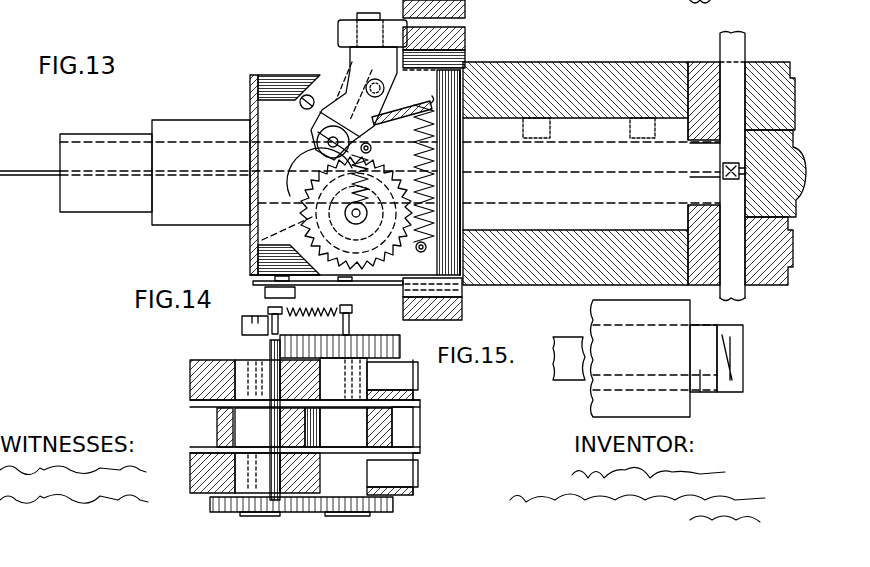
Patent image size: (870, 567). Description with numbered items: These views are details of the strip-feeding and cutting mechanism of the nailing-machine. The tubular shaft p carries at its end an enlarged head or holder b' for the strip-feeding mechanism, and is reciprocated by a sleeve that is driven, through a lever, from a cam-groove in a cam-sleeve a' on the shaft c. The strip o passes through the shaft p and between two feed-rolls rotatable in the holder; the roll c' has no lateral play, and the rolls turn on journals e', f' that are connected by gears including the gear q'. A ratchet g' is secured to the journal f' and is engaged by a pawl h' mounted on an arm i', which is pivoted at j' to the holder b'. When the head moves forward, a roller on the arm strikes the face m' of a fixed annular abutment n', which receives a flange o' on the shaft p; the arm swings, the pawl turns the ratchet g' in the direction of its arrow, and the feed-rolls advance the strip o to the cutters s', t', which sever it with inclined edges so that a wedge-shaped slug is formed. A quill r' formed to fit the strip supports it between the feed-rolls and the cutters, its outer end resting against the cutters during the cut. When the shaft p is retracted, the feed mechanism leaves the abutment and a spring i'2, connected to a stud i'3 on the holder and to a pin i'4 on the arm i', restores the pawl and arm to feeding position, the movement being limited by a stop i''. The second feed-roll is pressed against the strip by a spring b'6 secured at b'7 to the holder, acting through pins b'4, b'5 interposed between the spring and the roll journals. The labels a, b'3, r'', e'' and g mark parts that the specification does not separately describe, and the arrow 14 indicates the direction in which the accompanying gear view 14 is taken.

In FIG. 13, the strip o is at (30, 186).
In FIG. 14, the strip o is at (313, 427).
In FIG. 15, the strip o is at (772, 336).
In FIG. 13, the tubular shaft p is at (191, 130).
In FIG. 15, the tubular shaft p is at (593, 320).
In FIG. 13, the head or holder b' is at (353, 137).
In FIG. 14, the head or holder b' is at (293, 445).
In FIG. 13, the casing bottom block b'3 is at (265, 288).
In FIG. 13, the pin b'4 is at (328, 291).
In FIG. 14, the pin b'4 is at (392, 376).
In FIG. 13, the pin b'5 is at (348, 292).
In FIG. 14, the pin b'5 is at (392, 473).
In FIG. 14, the spring b'6 is at (448, 455).
In FIG. 13, the spring attachment point b'7 is at (449, 299).
In FIG. 13, the frame body a is at (634, 159).
In FIG. 13, the cam-sleeve a' is at (234, 243).
In FIG. 14, the cam-sleeve a' is at (420, 426).
In FIG. 13, the cutter s' is at (717, 159).
In FIG. 15, the cutter s' is at (748, 353).
In FIG. 13, the cutter t' is at (704, 154).
In FIG. 15, the cutter t' is at (703, 341).
In FIG. 14, the journal f' is at (386, 421).
In FIG. 13, the quill r' is at (705, 160).
In FIG. 15, the quill r' is at (701, 394).
In FIG. 13, the disk r'' is at (348, 175).
In FIG. 14, the journal e' is at (238, 356).
In FIG. 14, the lower lever arm e'' is at (226, 478).
In FIG. 13, the abutment face m' is at (489, 34).
In FIG. 13, the flange o' is at (475, 151).
In FIG. 13, the arm i' is at (314, 100).
In FIG. 13, the stop i'' is at (295, 111).
In FIG. 13, the spring i'2 is at (470, 188).
In FIG. 13, the stud i'3 is at (417, 258).
In FIG. 13, the pin i'4 is at (427, 162).
In FIG. 13, the shaft c is at (372, 23).
In FIG. 13, the feed-roll c' is at (349, 98).
In FIG. 14, the feed-roll c' is at (233, 420).
In FIG. 13, the fixed annular abutment n' is at (357, 72).
In FIG. 13, the pawl h' is at (380, 138).
In FIG. 14, the pawl h' is at (310, 320).
In FIG. 13, the pivot j' is at (402, 100).
In FIG. 14, the gear wheel g is at (340, 324).
In FIG. 13, the ratchet g' is at (356, 233).
In FIG. 14, the ratchet g' is at (357, 355).
In FIG. 14, the gear q' is at (301, 513).
In FIG. 13, the section arrow 14 is at (283, 34).